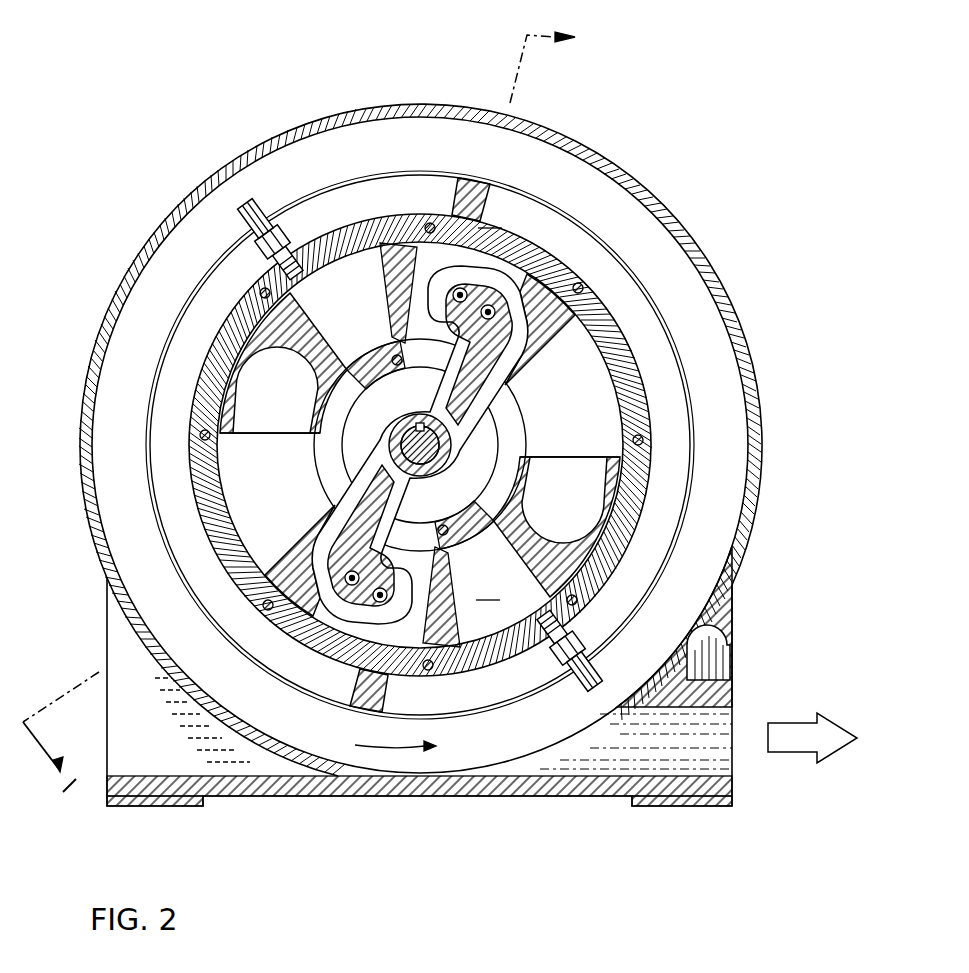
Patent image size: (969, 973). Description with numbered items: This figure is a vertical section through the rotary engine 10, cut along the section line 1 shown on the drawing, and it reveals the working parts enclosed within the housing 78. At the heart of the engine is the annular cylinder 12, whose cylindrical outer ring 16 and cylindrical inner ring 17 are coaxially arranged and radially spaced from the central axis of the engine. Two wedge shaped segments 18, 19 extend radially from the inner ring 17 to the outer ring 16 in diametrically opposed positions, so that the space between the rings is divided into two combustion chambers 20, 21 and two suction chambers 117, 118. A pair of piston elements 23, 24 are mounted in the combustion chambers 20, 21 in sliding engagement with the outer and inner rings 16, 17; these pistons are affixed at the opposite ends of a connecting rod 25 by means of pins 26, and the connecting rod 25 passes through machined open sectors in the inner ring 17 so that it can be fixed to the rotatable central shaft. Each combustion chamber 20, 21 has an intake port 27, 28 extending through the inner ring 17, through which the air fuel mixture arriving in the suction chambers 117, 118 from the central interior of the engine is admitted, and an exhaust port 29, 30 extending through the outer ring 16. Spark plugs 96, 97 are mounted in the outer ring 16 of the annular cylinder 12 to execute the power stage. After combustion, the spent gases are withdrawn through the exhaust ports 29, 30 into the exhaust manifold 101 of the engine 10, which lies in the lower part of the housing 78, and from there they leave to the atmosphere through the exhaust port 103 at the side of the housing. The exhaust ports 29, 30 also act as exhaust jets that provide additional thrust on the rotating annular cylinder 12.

The section line 1- 1 is at (310, 412).
The rotary engine 10 is at (340, 90).
The annular cylinder 12 is at (622, 306).
The cylindrical outer ring 16 is at (455, 195).
The cylindrical inner ring 17 is at (395, 255).
The wedge shaped segment 18 is at (273, 330).
The wedge shaped segment 19 is at (607, 510).
The combustion chamber 20 is at (338, 321).
The combustion chamber 21 is at (488, 586).
The piston element 23 is at (490, 250).
The piston element 24 is at (338, 646).
The connecting rod 25 is at (605, 343).
The pins 26 is at (405, 600).
The intake port 27 is at (447, 368).
The intake port 28 is at (393, 522).
The exhaust port 29 is at (420, 203).
The exhaust port 30 is at (333, 698).
The housing 78 is at (95, 372).
The spark plug 96 is at (257, 222).
The spark plug 97 is at (585, 693).
The exhaust manifold 101 is at (300, 740).
The exhaust port 103 is at (627, 740).
The suction chamber 117 is at (598, 400).
The suction chamber 118 is at (247, 487).